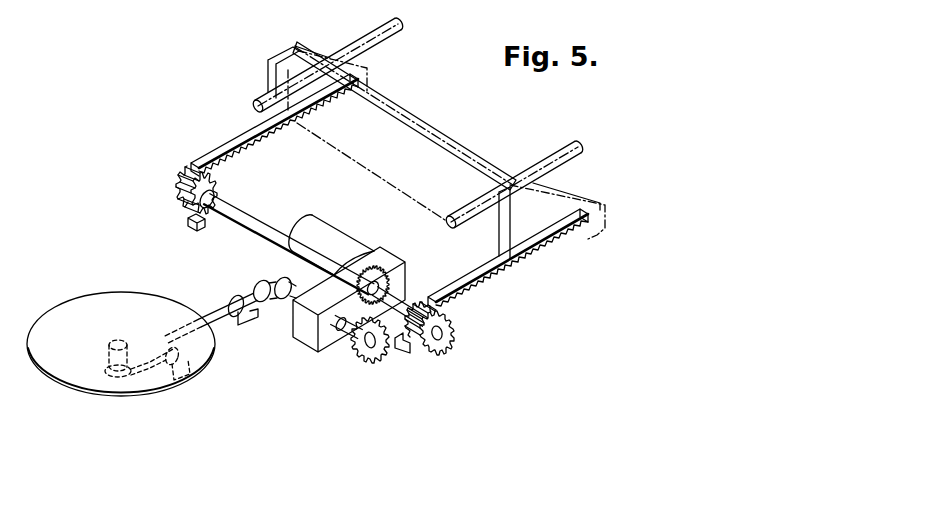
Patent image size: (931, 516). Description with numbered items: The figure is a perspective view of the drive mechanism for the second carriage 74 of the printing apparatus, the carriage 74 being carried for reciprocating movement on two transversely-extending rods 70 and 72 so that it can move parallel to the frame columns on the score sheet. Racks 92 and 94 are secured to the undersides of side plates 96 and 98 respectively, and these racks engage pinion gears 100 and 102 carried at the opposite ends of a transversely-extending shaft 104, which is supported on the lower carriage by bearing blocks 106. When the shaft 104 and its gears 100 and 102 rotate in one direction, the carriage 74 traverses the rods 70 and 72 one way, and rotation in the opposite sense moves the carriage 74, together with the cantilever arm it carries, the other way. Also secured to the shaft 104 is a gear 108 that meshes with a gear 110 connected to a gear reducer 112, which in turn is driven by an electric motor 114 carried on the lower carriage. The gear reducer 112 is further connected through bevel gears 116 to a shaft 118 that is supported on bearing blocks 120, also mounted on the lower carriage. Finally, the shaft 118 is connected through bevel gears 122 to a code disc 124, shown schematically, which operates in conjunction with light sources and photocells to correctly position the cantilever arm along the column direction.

The transversely-extending rod 70 is at (566, 148).
The transversely-extending rod 72 is at (385, 27).
The second carriage 74 is at (428, 124).
The rack 92 is at (258, 140).
The rack 94 is at (520, 262).
The side plate 96 is at (296, 48).
The side plate 98 is at (578, 191).
The pinion gear 100 is at (181, 204).
The pinion gear 102 is at (441, 345).
The transversely-extending shaft 104 is at (263, 234).
The bearing block 106 is at (187, 228).
The gear 108 is at (392, 286).
The gear 110 is at (360, 358).
The gear reducer 112 is at (313, 347).
The electric motor 114 is at (335, 229).
The bevel gears 116 is at (266, 280).
The shaft 118 is at (218, 326).
The bearing block 120 is at (234, 300).
The bevel gears 122 is at (126, 395).
The code disc 124 is at (78, 309).